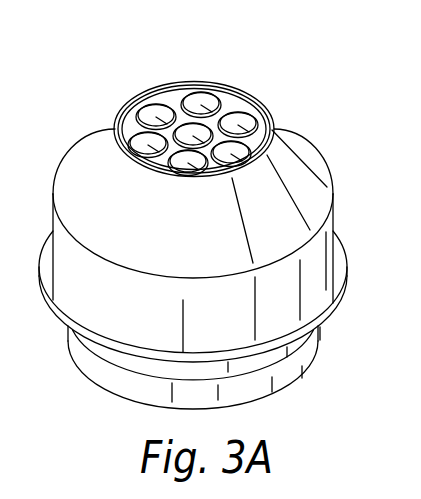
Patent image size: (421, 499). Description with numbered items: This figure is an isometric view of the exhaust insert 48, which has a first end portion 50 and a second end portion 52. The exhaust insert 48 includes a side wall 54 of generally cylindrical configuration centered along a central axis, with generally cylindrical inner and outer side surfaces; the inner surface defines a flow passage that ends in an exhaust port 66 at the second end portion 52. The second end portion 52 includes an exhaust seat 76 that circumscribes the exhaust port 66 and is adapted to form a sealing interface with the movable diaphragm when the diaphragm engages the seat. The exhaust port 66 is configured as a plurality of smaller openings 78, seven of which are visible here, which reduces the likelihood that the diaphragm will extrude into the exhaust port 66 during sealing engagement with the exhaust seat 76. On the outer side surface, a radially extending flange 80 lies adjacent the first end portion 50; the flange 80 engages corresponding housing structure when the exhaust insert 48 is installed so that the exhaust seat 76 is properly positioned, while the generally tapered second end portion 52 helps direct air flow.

The exhaust insert 48 is at (113, 75).
The first end portion 50 is at (312, 386).
The second end portion 52 is at (282, 100).
The side wall 54 is at (97, 294).
The exhaust port 66 is at (209, 70).
The exhaust seat 76 is at (168, 85).
The smaller openings 78 is at (157, 115).
The flange 80 is at (137, 360).